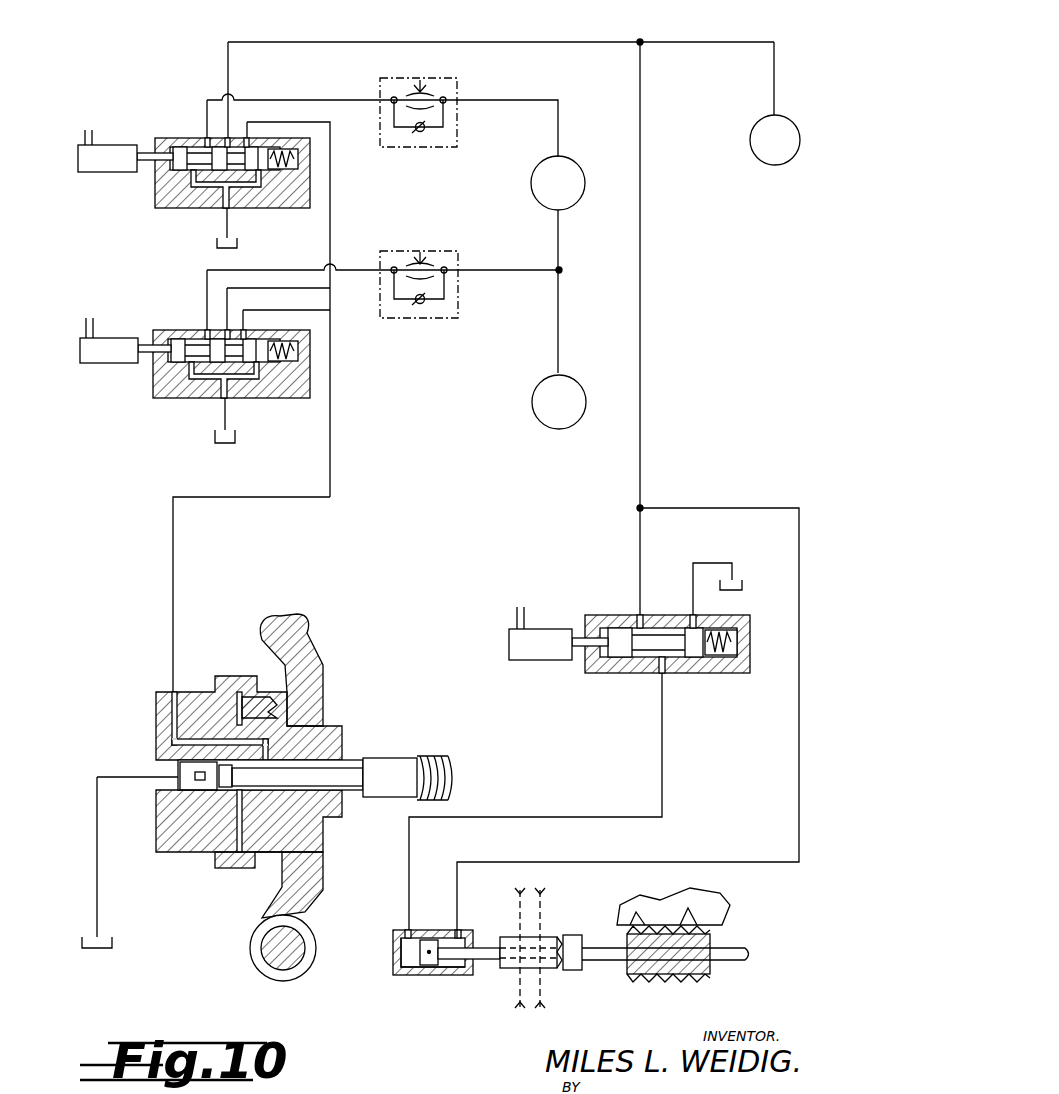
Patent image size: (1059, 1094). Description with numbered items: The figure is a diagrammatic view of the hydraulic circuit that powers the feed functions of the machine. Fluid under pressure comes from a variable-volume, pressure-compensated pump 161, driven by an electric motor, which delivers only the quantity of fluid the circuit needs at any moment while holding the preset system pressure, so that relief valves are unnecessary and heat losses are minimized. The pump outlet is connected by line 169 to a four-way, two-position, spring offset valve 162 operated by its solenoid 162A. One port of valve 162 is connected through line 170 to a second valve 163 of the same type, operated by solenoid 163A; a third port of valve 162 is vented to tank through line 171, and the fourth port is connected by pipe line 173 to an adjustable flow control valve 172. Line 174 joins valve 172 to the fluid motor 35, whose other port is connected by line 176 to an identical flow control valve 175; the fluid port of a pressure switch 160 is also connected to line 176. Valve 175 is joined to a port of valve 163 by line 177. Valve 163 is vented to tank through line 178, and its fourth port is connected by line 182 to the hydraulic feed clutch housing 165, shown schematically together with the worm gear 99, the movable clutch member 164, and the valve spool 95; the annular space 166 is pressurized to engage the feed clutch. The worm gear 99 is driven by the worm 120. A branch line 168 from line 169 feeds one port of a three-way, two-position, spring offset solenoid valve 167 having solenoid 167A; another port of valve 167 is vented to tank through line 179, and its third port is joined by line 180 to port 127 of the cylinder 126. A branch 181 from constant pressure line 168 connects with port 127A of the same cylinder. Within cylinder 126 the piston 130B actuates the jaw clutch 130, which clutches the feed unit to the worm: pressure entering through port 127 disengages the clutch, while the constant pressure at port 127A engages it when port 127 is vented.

The fluid motor 35 is at (584, 174).
The valve spool 95 is at (397, 766).
The worm gear 99 is at (305, 653).
The worm 120 is at (262, 965).
The cylinder 126 is at (394, 974).
The connection (port) 127 is at (405, 930).
The port 127A is at (458, 930).
The jaw clutch 130 is at (572, 970).
The piston 130B is at (433, 960).
The pressure switch 160 is at (532, 406).
The variable-volume, pressure-compensated pump 161 is at (768, 163).
The solenoid operated, spring offset valve 162 is at (172, 138).
The solenoid 162A is at (107, 145).
The solenoid operated, spring offset valve 163 is at (167, 330).
The solenoid 163A is at (105, 338).
The movable clutch member 164 is at (262, 692).
The hydraulic feed clutch housing 165 is at (158, 722).
The annular space 166 is at (216, 852).
The solenoid valve 167 is at (606, 674).
The solenoid 167A is at (542, 628).
The branch line 168 is at (642, 433).
The line 169 is at (528, 42).
The line 170 is at (331, 200).
The line 171 is at (224, 228).
The adjustable flow control valve 172 is at (447, 78).
The pipe line 173 is at (330, 99).
The line 174 is at (535, 100).
The flow control valve 175 is at (422, 251).
The line 176 is at (560, 252).
The line 177 is at (345, 271).
The line 178 is at (224, 418).
The line 179 is at (703, 563).
The line 180 is at (661, 770).
The branch 181 is at (798, 722).
The line 182 is at (172, 582).